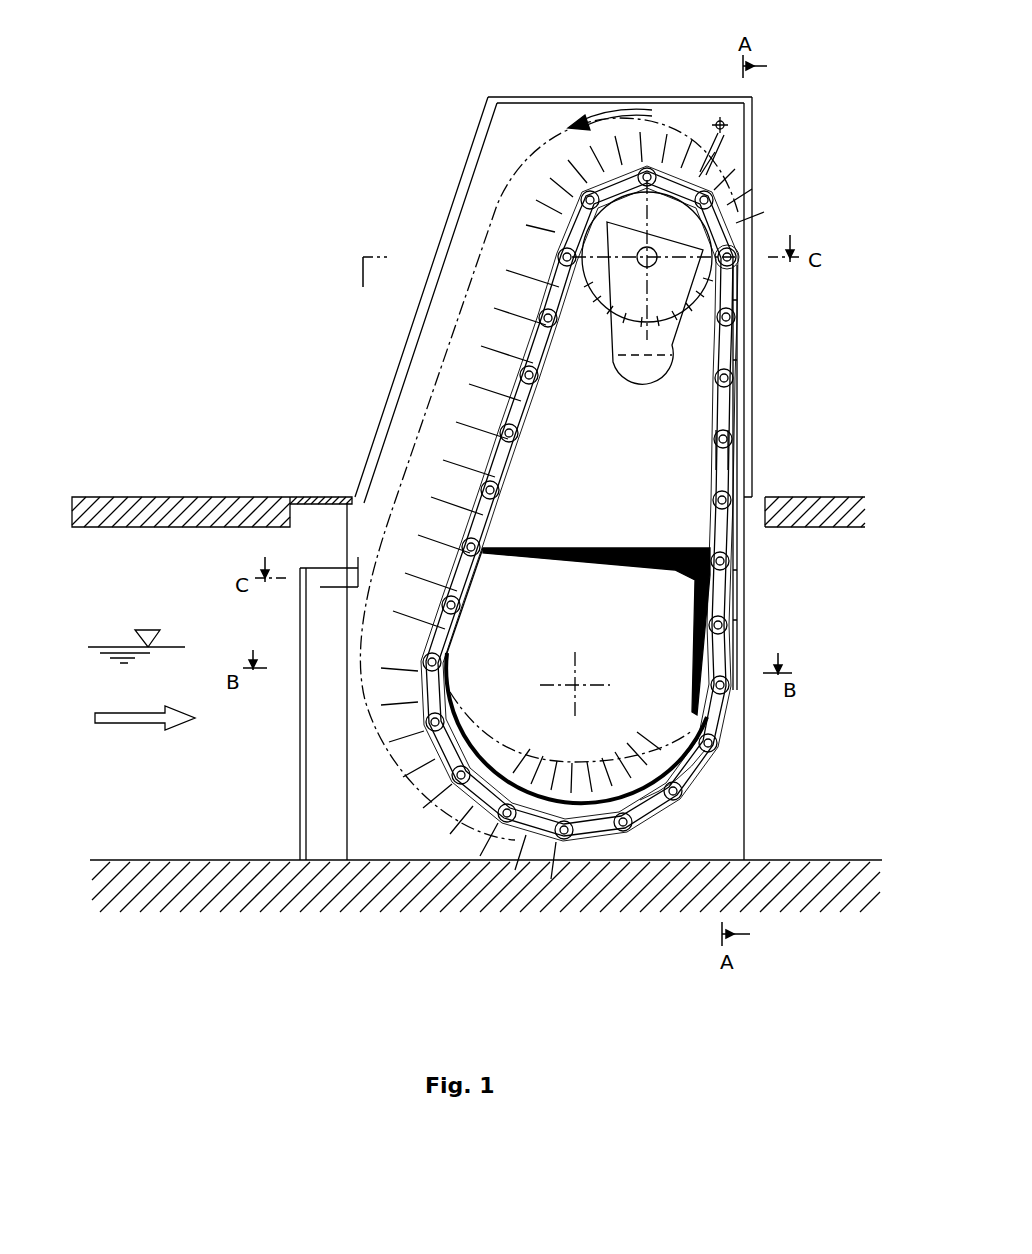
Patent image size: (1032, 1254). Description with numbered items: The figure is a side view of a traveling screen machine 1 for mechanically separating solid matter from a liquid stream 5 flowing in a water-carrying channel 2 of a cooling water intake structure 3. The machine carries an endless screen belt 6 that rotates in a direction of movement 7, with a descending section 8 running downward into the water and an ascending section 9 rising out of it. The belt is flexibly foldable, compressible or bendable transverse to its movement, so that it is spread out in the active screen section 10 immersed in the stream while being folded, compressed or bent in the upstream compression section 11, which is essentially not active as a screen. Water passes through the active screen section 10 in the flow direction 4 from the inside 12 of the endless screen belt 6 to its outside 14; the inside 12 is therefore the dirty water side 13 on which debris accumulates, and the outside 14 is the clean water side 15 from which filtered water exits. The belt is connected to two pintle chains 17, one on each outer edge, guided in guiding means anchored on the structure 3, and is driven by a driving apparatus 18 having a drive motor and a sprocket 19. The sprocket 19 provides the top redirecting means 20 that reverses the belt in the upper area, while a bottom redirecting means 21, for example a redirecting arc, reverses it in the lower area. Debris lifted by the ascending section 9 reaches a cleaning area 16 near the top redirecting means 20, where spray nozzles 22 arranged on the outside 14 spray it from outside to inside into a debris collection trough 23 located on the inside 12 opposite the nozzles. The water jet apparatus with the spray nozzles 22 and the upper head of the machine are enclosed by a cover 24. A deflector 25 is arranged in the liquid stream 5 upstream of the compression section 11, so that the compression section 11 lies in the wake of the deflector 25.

The traveling screen machine 1 is at (303, 126).
The water-carrying channel 2 is at (120, 548).
The cooling water intake structure 3 is at (178, 512).
The flow direction 4 is at (140, 724).
The liquid stream 5 is at (246, 767).
The endless screen belt 6 is at (735, 337).
The direction of movement 7 is at (606, 116).
The descending section 8 is at (503, 452).
The ascending section 9 is at (728, 458).
The active screen section 10 is at (735, 598).
The compression section 11 is at (513, 386).
The inside of the endless screen belt 12 is at (596, 634).
The dirty water side 13 is at (246, 813).
The outside of the endless screen belt 14 is at (860, 622).
The clean water side 15 is at (862, 753).
The cleaning area 16 is at (688, 86).
The pintle chains 17 is at (733, 380).
The driving apparatus 18 is at (770, 178).
The sprocket 19 is at (735, 226).
The top redirecting means 20 is at (604, 200).
The bottom redirecting means 21 is at (685, 760).
The spray nozzles 22 is at (728, 122).
The debris collection trough 23 is at (628, 372).
The cover 24 is at (470, 172).
The deflector 25 is at (300, 823).